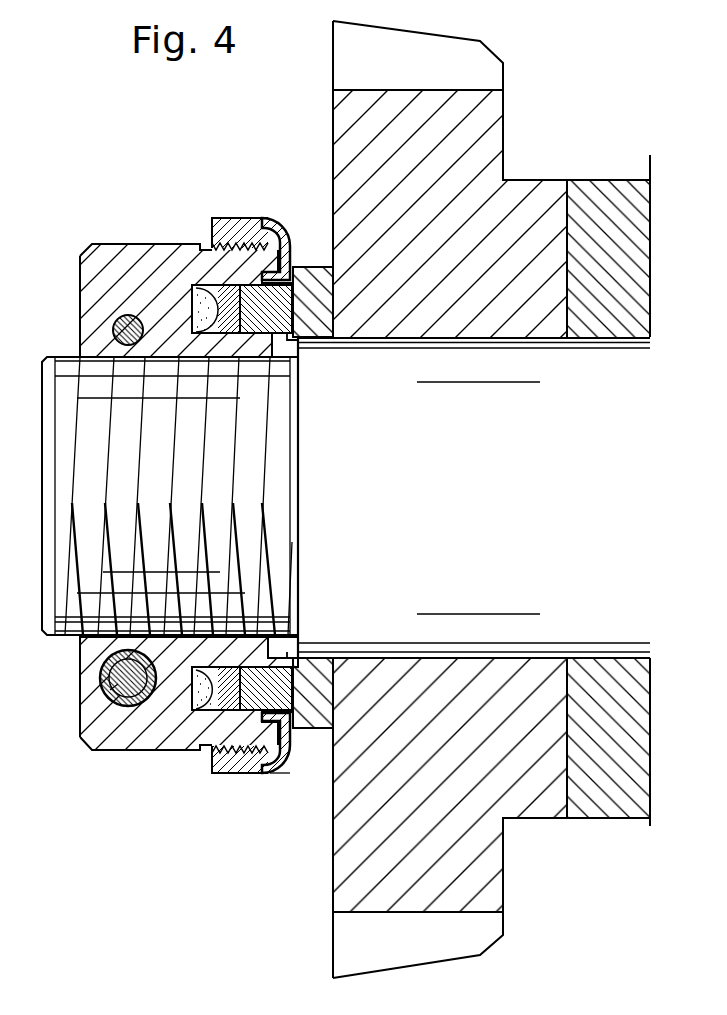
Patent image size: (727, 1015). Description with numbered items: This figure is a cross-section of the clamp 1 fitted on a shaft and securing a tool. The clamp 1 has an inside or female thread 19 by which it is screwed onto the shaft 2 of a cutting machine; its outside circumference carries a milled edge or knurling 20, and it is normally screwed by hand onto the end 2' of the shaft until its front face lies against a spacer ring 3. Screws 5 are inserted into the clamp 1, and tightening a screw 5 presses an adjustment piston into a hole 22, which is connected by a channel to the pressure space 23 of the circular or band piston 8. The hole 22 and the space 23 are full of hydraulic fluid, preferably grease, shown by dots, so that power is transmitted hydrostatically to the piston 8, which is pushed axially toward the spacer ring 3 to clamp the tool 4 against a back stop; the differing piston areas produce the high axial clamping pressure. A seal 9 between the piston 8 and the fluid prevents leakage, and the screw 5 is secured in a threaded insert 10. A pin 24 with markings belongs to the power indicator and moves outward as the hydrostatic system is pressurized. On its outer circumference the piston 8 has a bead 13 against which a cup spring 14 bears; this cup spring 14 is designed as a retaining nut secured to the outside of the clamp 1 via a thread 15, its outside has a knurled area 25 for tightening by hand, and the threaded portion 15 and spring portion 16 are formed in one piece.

The clamp 1 is at (133, 230).
The shaft 2 is at (474, 498).
The end of the shaft 2' is at (154, 496).
The spacer ring 3 is at (318, 679).
The tool 4 is at (492, 135).
The screw 5 is at (110, 690).
The band piston 8 is at (268, 680).
The seal 9 is at (205, 752).
The threaded insert 10 is at (100, 668).
The bead 13 is at (245, 775).
The cup spring 14 is at (277, 786).
The thread 15 is at (246, 218).
The spring portion 16 is at (292, 740).
The female thread 19 is at (102, 358).
The knurling 20 is at (146, 760).
The hole 22 is at (115, 720).
The pressure space 23 is at (207, 290).
The pin 24 is at (118, 328).
The knurled area 25 is at (270, 208).